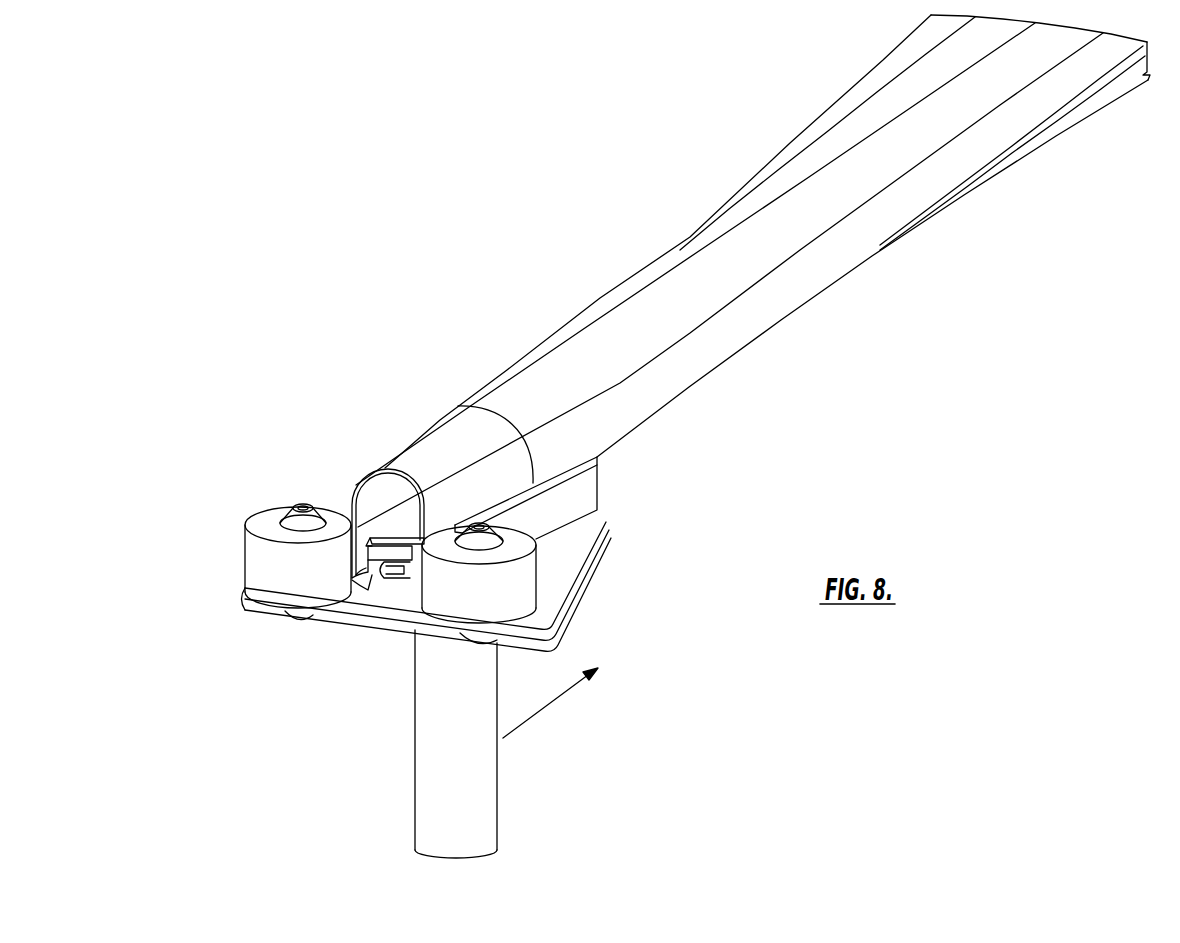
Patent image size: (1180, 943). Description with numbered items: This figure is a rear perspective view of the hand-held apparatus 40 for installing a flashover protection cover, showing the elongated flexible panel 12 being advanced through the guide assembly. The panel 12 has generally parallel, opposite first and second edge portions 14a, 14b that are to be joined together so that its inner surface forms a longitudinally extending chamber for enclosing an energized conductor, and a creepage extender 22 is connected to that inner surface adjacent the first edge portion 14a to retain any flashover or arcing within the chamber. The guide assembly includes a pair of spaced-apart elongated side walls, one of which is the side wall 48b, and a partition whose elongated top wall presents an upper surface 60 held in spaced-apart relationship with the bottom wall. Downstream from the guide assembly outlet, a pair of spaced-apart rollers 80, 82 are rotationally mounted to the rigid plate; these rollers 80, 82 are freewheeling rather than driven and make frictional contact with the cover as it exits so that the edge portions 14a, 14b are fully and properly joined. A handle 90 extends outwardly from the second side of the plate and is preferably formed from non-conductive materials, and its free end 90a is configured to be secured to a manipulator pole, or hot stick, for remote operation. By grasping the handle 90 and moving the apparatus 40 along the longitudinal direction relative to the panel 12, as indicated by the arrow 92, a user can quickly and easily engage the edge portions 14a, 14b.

The elongated flexible panel 12 is at (800, 133).
The creepage extender 22 is at (398, 530).
The upper surface of top wall 60 is at (403, 527).
The first edge portion 14a is at (403, 575).
The second edge portion 14b is at (368, 575).
The roller 82 is at (258, 553).
The roller 80 is at (520, 580).
The elongated side wall 48b is at (592, 470).
The hand-held apparatus 40 is at (337, 738).
The handle 90 is at (497, 805).
The free end of handle 90a is at (470, 857).
The arrow 92 is at (550, 707).